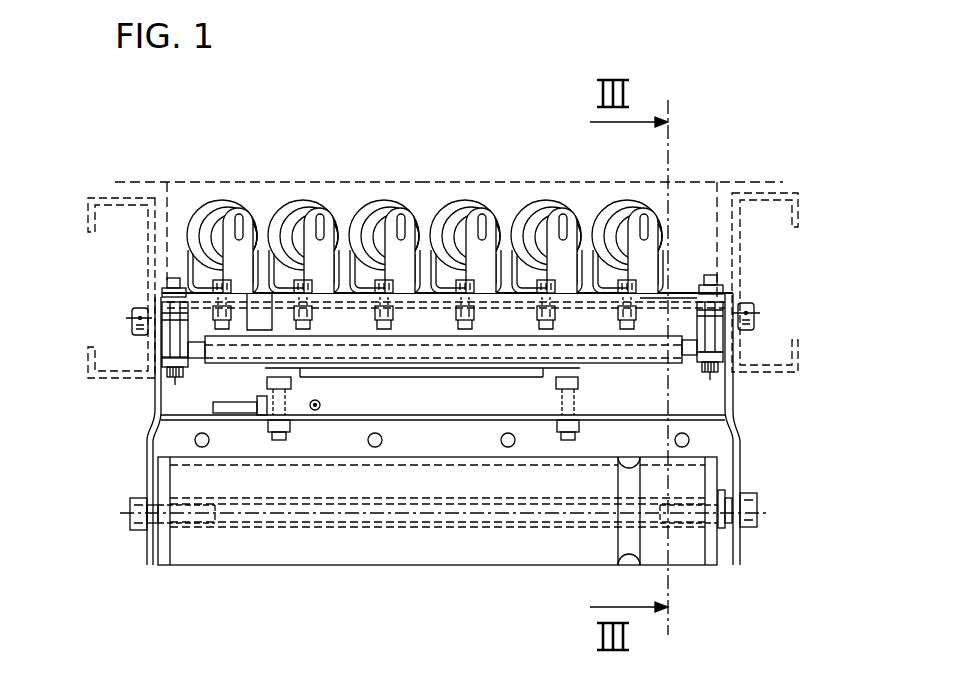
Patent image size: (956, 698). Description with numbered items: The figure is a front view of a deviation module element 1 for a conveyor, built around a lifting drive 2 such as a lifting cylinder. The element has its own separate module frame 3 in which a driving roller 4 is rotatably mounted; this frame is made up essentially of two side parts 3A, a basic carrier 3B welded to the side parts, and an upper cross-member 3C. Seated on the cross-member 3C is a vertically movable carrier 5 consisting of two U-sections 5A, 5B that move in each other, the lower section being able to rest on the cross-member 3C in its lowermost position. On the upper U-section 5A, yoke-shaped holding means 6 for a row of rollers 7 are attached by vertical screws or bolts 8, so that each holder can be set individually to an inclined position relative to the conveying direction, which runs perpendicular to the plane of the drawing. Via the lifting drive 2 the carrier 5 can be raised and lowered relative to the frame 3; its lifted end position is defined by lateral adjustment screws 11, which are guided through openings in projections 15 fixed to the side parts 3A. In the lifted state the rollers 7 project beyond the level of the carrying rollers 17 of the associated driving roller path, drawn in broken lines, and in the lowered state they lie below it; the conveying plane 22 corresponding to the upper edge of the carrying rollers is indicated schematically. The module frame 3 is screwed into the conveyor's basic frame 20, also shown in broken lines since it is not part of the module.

The deviation module element 1 is at (757, 166).
The lifting drive 2 is at (428, 402).
The module frame 3 is at (450, 429).
The side parts 3A is at (147, 453).
The basic carrier 3B is at (716, 447).
The upper cross-member 3C is at (682, 322).
The driving roller 4 is at (330, 543).
The vertically movable carrier 5 is at (684, 292).
The upper U-section 5A is at (145, 315).
The lower U-section 5B is at (255, 353).
The holding means 6 is at (484, 262).
The rollers 7 is at (210, 190).
The bolts 8 is at (288, 196).
The adjustment screws 11 is at (176, 355).
The projections 15 is at (186, 362).
The carrying rollers 17 is at (338, 182).
The basic frame 20 is at (800, 206).
The conveying plane 22 is at (421, 182).